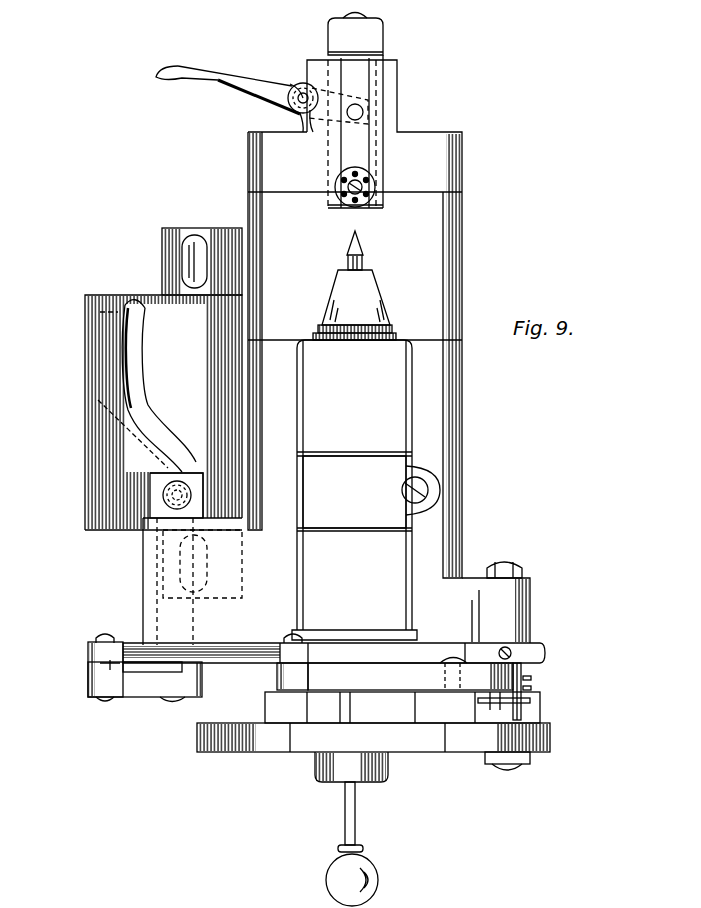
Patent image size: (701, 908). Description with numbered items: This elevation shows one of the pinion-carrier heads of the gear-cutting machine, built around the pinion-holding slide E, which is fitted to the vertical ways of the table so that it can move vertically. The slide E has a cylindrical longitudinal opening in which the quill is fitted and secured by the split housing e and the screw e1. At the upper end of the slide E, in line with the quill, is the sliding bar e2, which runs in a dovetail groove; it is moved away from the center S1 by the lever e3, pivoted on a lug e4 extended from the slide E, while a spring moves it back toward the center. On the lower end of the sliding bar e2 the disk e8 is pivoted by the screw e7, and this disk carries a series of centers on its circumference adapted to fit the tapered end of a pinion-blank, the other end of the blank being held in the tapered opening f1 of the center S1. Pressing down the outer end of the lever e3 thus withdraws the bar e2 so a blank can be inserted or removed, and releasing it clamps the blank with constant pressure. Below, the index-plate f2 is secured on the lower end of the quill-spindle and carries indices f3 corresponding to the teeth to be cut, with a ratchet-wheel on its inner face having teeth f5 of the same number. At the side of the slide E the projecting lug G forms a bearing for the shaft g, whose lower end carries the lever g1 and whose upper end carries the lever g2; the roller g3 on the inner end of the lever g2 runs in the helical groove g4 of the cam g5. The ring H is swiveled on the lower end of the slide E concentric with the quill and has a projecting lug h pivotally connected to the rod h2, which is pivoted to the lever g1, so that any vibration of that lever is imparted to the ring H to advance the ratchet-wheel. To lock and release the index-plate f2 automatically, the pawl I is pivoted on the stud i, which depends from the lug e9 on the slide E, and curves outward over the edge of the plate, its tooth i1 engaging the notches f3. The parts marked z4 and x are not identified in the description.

The pinion-holding slide E is at (482, 425).
The screw e1 is at (418, 473).
The sliding bar e2 is at (372, 155).
The lever e3 is at (230, 92).
The lug e4 is at (294, 88).
The screw e7 is at (378, 186).
The disk e8 is at (383, 207).
The lug e9 is at (518, 604).
The split housing e is at (354, 492).
The center S1 is at (362, 210).
The tapered opening f1 is at (368, 262).
The index-plate f2 is at (552, 738).
The indices f3 is at (258, 738).
The teeth f5 is at (350, 707).
The cylinder z4 is at (354, 490).
The projecting lug G is at (152, 568).
The shaft g is at (90, 670).
The lever g1 is at (134, 698).
The lever g2 is at (180, 465).
The roller g3 is at (176, 495).
The helical groove g4 is at (142, 370).
The cam g5 is at (100, 312).
The ring H is at (236, 665).
The projecting lug h is at (266, 698).
The rod h2 is at (226, 688).
The pawl I is at (373, 737).
The stud i is at (528, 704).
The tooth i1 is at (535, 690).
The cross pin x is at (519, 700).